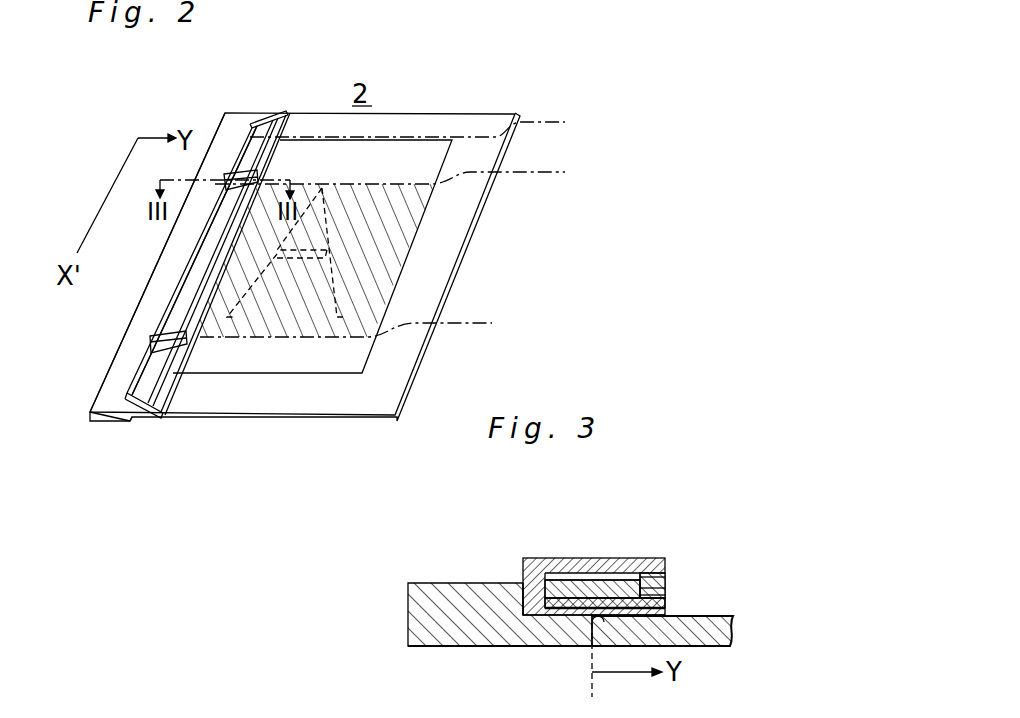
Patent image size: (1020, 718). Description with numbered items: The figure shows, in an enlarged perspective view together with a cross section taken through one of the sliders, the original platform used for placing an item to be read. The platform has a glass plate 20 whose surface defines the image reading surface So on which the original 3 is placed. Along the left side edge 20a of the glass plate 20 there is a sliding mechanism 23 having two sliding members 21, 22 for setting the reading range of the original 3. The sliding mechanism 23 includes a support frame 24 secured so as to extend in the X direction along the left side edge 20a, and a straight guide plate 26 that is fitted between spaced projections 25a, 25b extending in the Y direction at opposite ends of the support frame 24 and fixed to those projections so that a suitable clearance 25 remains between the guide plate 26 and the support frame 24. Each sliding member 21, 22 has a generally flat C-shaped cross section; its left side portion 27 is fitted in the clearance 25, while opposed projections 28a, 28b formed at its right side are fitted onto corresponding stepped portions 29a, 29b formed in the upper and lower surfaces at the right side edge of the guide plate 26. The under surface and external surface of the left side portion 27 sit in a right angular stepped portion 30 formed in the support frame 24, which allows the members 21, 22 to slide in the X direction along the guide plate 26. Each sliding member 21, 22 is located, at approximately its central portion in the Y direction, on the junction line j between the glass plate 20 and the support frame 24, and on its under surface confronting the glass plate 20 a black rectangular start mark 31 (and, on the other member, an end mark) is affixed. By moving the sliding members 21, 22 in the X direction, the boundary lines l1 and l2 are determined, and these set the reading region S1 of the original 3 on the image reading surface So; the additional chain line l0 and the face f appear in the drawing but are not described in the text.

In FIG. 2, the original 3 is at (423, 157).
In FIG. 2, the glass plate 20 is at (460, 262).
In FIG. 3, the glass plate 20 is at (703, 632).
In FIG. 2, the left side edge of the glass plate 20a is at (142, 420).
In FIG. 3, the left side edge of the glass plate 20a is at (603, 647).
In FIG. 2, the sliding member 21 is at (228, 172).
In FIG. 3, the sliding member 21 is at (615, 580).
In FIG. 2, the sliding member 22 is at (152, 332).
In FIG. 2, the sliding mechanism 23 is at (158, 260).
In FIG. 2, the support frame 24 is at (110, 358).
In FIG. 3, the support frame 24 is at (406, 614).
In FIG. 2, the clearance 25 is at (198, 233).
In FIG. 2, the projection 25a is at (273, 112).
In FIG. 2, the projection 25b is at (133, 402).
In FIG. 2, the guide plate 26 is at (190, 292).
In FIG. 3, the guide plate 26 is at (577, 587).
In FIG. 2, the left side portion of the sliding member 27 is at (148, 345).
In FIG. 3, the left side portion of the sliding member 27 is at (537, 573).
In FIG. 3, the projection 28a is at (650, 580).
In FIG. 3, the projection 28b is at (660, 603).
In FIG. 3, the stepped portion 29a is at (650, 592).
In FIG. 3, the stepped portion 29b is at (653, 598).
In FIG. 3, the right angular stepped portion 30 is at (528, 587).
In FIG. 3, the start mark 31 is at (663, 623).
In FIG. 2, the reading region S1 is at (400, 213).
In FIG. 2, the image reading surface So is at (378, 382).
In FIG. 2, the reference line l0 is at (421, 121).
In FIG. 2, the boundary line l1 is at (404, 171).
In FIG. 2, the boundary line l2 is at (360, 323).
In FIG. 3, the fixing face f is at (527, 613).
In FIG. 3, the junction line j is at (592, 628).